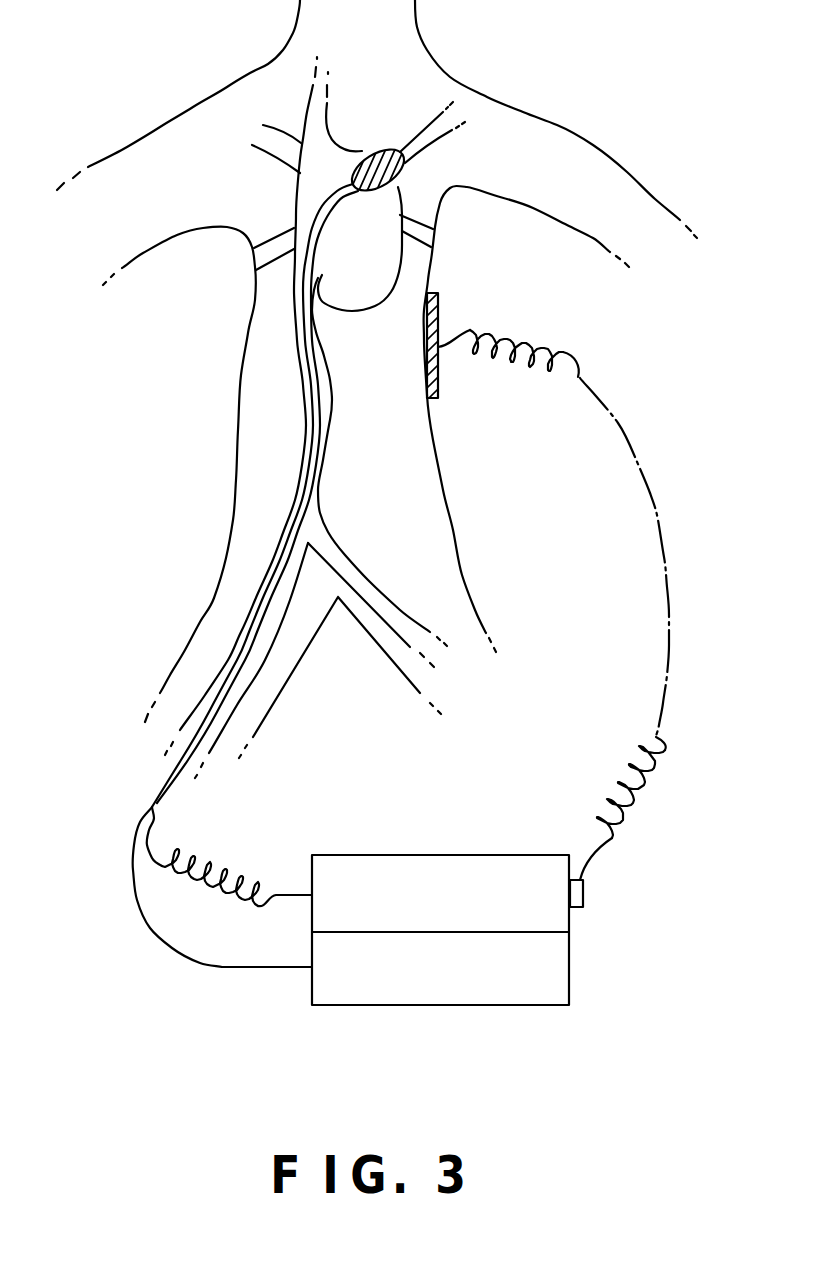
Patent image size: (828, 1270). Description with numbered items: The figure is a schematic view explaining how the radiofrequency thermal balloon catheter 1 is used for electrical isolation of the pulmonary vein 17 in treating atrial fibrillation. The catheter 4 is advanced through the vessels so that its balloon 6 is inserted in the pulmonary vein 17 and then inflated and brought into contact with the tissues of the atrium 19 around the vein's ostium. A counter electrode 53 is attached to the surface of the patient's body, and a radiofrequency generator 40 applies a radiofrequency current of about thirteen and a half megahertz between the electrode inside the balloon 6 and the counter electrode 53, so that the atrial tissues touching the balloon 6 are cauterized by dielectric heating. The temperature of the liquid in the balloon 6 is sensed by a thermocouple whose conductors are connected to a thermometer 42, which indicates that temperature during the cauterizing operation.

The radiofrequency thermal balloon catheter 1 is at (340, 178).
The catheter 4 is at (318, 238).
The balloon 6 is at (374, 192).
The pulmonary vein 17 is at (443, 141).
The atrium 19 is at (342, 156).
The counter electrode 53 is at (440, 378).
The radiofrequency generator 40 is at (440, 854).
The thermometer 42 is at (443, 1007).